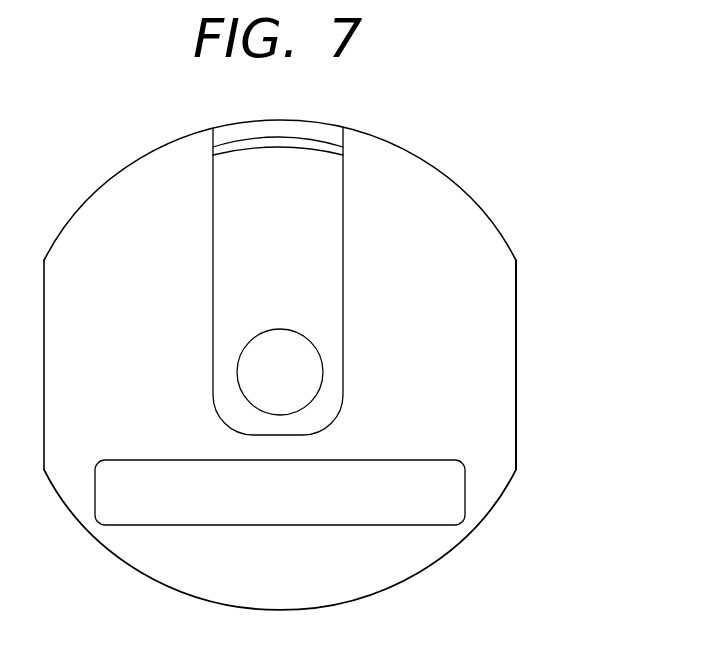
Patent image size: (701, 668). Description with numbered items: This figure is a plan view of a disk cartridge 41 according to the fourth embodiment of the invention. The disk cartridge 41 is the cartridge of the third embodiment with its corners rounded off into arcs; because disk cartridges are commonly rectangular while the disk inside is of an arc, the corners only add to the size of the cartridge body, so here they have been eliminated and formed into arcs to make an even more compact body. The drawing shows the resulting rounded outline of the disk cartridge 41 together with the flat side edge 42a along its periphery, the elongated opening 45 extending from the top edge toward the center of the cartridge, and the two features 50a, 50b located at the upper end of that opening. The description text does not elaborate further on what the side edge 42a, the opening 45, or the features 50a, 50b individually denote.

The disk cartridge 41 is at (599, 569).
The flat side edge 42a is at (517, 421).
The slot 45 is at (253, 203).
The groove 50a is at (287, 157).
The groove 50b is at (278, 151).